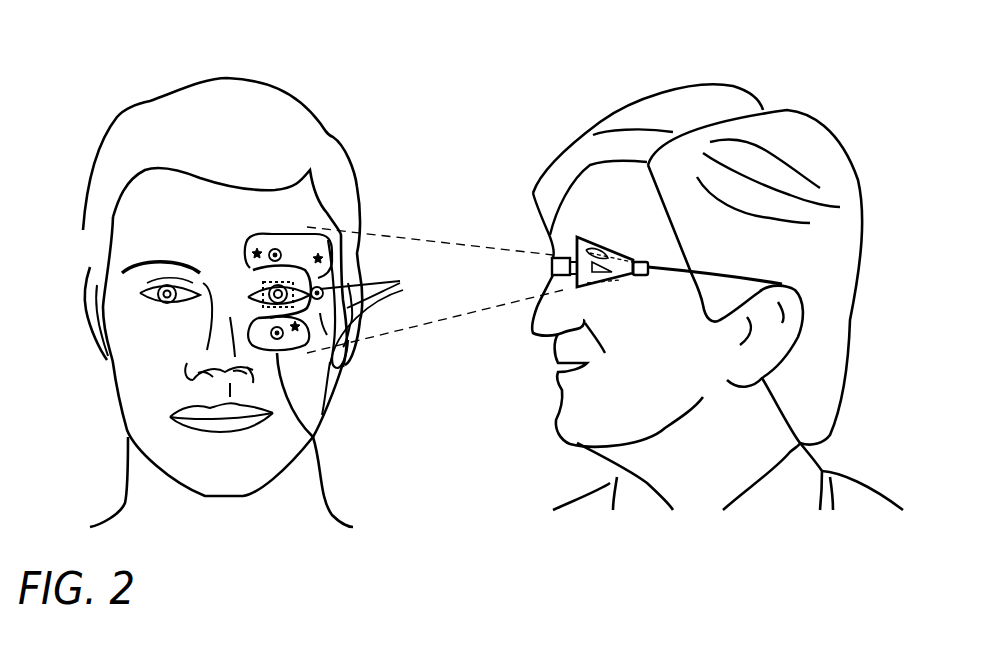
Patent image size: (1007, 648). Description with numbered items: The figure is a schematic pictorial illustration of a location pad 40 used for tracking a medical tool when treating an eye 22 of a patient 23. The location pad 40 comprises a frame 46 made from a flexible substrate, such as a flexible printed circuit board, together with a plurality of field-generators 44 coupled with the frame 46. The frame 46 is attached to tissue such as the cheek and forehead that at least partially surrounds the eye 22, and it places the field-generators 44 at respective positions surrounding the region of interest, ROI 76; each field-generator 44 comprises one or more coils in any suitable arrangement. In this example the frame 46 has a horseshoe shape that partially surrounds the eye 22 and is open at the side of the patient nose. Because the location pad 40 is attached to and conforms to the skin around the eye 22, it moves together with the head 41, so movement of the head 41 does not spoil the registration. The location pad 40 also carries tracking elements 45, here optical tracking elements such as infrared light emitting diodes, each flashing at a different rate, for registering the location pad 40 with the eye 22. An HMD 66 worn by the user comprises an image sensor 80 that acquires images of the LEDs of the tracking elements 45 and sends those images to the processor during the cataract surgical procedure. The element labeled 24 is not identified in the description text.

The head 41 is at (151, 105).
The tracking elements 45 is at (317, 253).
The ROI 76 is at (243, 284).
The eye 22 is at (252, 270).
The field-generators 44 is at (376, 317).
The location pad 40 is at (313, 365).
The frame 46 is at (312, 431).
The patient 23 is at (127, 503).
The HMD 66 is at (583, 235).
The image sensor 80 is at (647, 262).
The shoulder / body of the user 24 is at (883, 490).